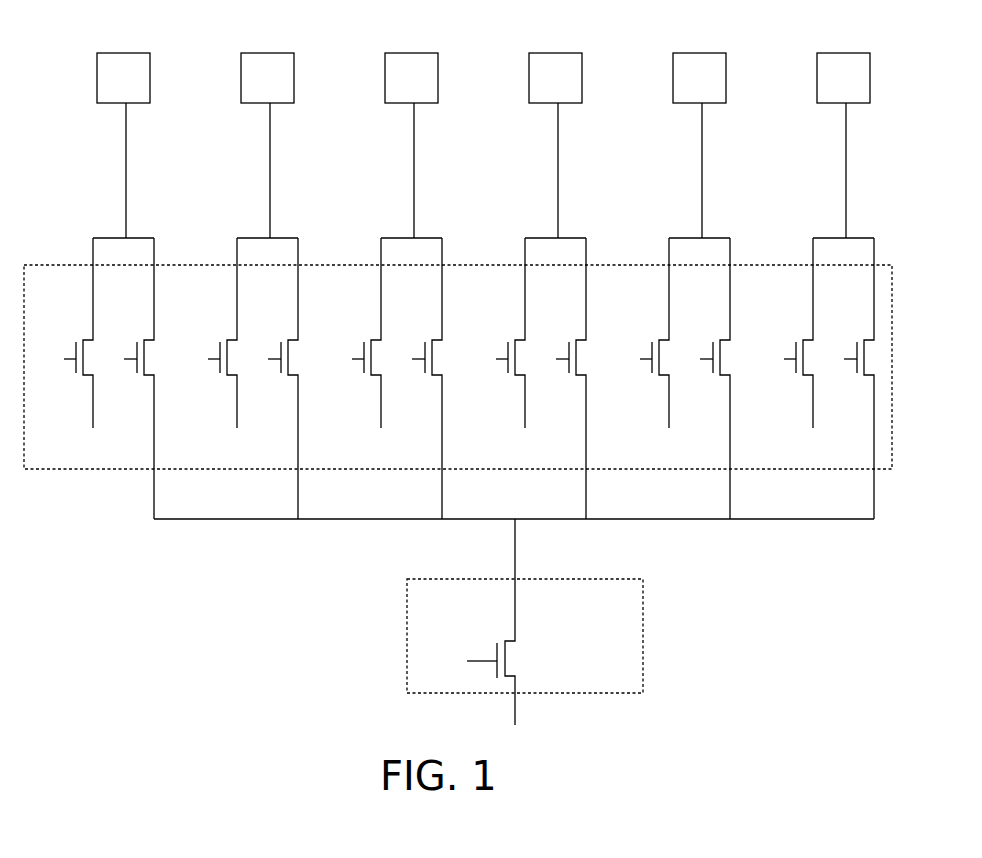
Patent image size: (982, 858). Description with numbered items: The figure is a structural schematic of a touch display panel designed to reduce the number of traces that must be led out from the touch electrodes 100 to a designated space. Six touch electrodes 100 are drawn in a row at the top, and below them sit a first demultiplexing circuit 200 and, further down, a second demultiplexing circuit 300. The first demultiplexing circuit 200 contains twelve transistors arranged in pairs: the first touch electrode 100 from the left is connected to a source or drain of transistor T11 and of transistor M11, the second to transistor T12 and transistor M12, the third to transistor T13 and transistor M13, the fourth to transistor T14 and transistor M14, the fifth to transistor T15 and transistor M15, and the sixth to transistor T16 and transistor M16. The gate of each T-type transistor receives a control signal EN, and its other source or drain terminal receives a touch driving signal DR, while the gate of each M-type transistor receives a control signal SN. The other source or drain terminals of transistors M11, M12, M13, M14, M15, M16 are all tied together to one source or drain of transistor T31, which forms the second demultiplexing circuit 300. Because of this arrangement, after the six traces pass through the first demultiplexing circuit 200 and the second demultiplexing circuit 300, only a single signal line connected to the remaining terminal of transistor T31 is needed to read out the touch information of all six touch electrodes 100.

The touch electrode 100 is at (582, 83).
The first demultiplexing circuit 200 is at (742, 261).
The second demultiplexing circuit 300 is at (570, 579).
The transistor T11 is at (81, 333).
The transistor T12 is at (225, 333).
The transistor T13 is at (369, 333).
The transistor T14 is at (513, 333).
The transistor T15 is at (657, 333).
The transistor T16 is at (801, 333).
The transistor M11 is at (140, 378).
The transistor M12 is at (284, 378).
The transistor M13 is at (428, 378).
The transistor M14 is at (572, 378).
The transistor M15 is at (716, 378).
The transistor M16 is at (860, 378).
The transistor T31 is at (500, 622).